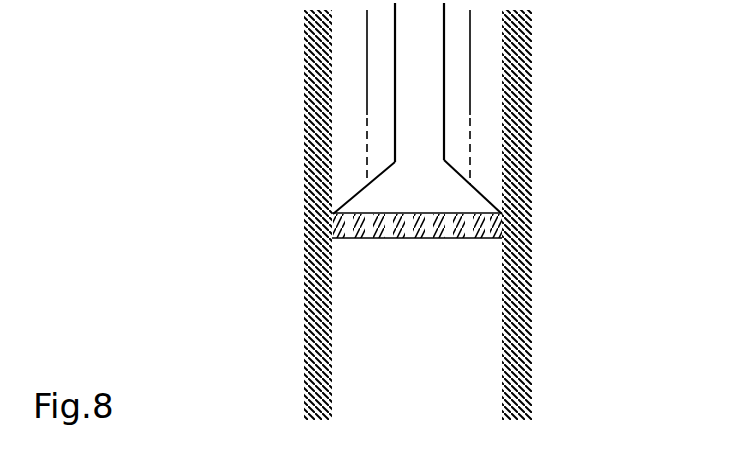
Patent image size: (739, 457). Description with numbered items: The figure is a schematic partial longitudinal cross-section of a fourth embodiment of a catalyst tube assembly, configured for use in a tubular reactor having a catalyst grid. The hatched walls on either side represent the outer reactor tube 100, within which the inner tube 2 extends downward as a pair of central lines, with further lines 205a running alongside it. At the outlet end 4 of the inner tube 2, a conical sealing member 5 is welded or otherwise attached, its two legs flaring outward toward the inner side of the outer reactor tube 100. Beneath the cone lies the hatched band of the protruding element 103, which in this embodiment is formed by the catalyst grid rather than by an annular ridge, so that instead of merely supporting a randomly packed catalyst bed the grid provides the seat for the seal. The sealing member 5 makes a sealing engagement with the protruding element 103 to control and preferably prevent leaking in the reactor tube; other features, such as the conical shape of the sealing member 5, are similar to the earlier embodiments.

The outer reactor tube 100 is at (303, 190).
The inner tube 2 is at (448, 115).
The inner tube 205a is at (470, 80).
The outlet end of the inner tube 4 is at (395, 162).
The sealing member 5 is at (500, 178).
The protruding element 103 is at (505, 215).